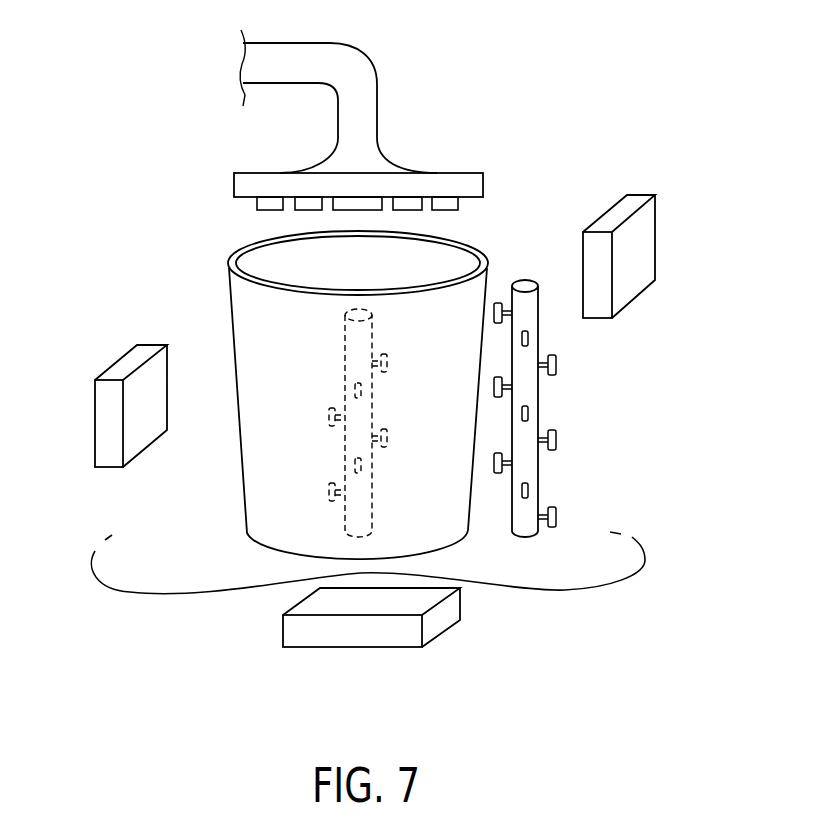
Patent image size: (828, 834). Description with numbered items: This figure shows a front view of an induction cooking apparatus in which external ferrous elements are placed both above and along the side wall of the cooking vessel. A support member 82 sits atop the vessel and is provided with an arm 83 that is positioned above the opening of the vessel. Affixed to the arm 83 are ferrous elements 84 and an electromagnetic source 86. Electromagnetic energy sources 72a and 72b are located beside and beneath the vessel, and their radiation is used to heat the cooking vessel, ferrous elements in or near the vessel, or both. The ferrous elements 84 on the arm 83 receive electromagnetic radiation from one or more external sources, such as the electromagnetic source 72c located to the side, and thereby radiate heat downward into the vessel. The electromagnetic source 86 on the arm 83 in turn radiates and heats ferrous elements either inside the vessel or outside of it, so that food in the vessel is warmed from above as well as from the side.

The support member 82 is at (287, 53).
The arm 83 is at (433, 183).
The electromagnetic source 86 is at (356, 210).
The ferrous elements 84 is at (448, 210).
The electromagnetic energy source 72a is at (147, 425).
The electromagnetic energy source 72b is at (342, 625).
The electromagnetic source 72c is at (637, 275).